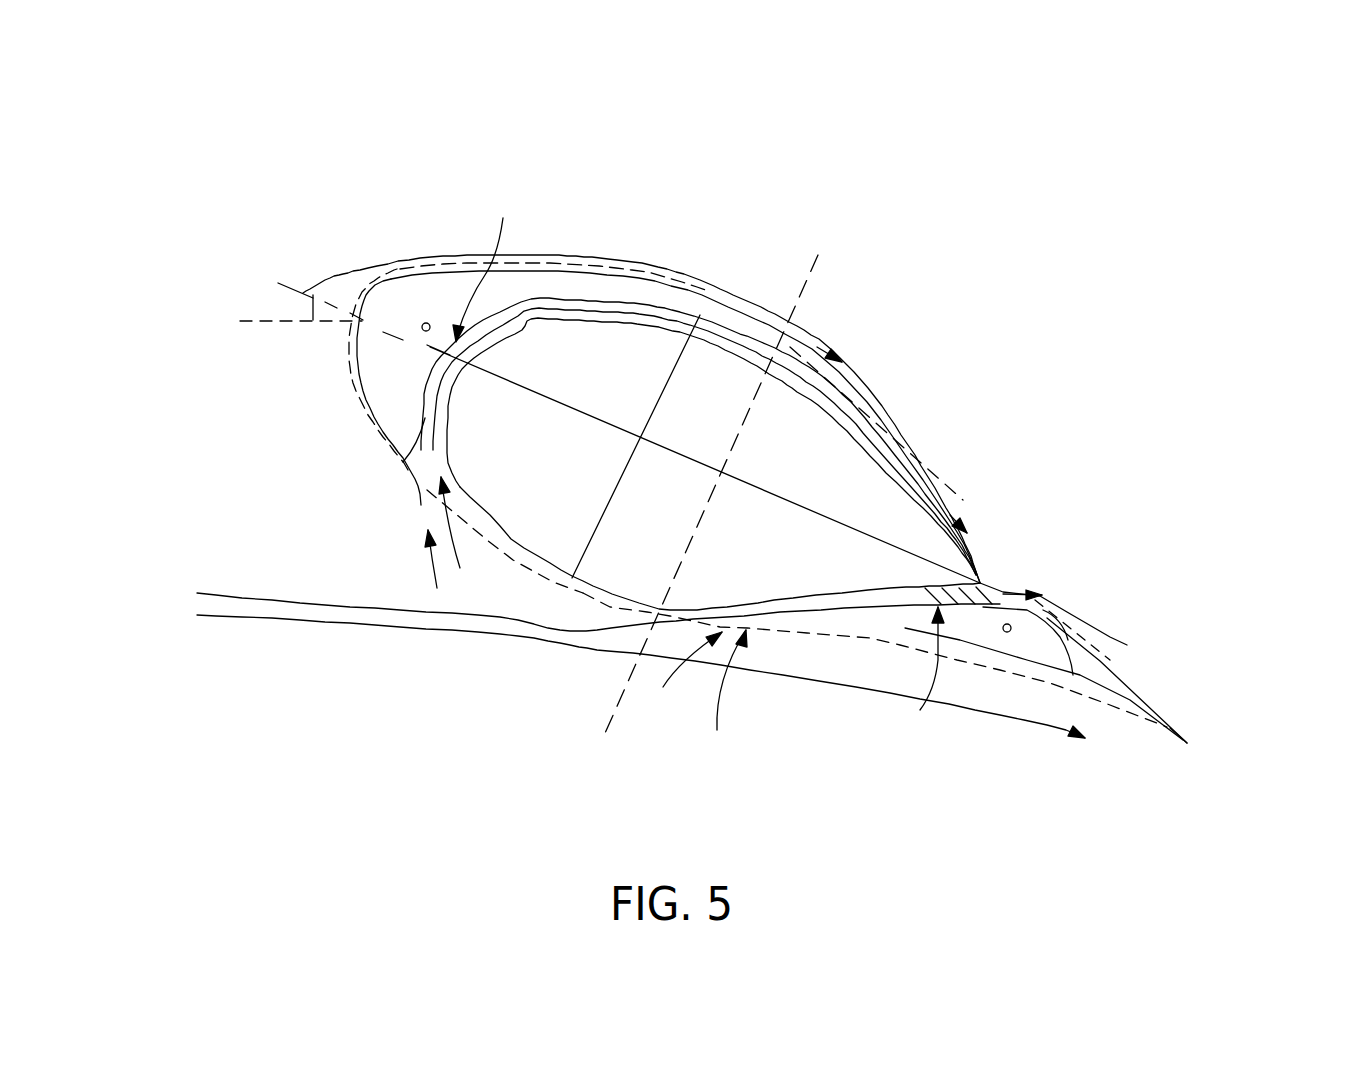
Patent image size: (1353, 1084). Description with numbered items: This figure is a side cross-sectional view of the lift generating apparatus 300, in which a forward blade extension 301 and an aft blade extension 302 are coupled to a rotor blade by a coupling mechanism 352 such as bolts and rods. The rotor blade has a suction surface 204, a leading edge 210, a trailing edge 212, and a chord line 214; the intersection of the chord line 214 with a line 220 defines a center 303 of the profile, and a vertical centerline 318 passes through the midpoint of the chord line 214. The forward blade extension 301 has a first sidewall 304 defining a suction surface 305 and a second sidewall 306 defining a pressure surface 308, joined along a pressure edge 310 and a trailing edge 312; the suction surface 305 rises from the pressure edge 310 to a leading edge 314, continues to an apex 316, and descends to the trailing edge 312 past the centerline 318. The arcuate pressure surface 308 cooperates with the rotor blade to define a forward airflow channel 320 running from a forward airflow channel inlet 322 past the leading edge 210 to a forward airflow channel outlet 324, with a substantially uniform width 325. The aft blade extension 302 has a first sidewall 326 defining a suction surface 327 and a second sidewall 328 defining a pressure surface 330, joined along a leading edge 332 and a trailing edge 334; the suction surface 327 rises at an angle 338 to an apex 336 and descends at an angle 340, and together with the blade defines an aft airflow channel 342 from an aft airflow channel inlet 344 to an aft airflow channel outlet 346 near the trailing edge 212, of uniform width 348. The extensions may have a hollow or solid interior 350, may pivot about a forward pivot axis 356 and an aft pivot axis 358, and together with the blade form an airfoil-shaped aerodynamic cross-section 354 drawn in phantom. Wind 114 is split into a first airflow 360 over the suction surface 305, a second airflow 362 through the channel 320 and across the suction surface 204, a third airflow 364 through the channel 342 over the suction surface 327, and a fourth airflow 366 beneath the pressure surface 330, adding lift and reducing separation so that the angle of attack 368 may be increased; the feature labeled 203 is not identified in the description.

The wind 114 is at (237, 432).
The inner cavity 203 is at (550, 568).
The suction surface 204 is at (678, 316).
The leading edge 210 is at (467, 367).
The trailing edge 212 is at (980, 583).
The chord line 214 is at (790, 497).
The line 220 is at (578, 567).
The lift generating apparatus 300 is at (1033, 198).
The forward blade extension 301 is at (385, 200).
The aft blade extension 302 is at (1230, 524).
The center 303 is at (641, 442).
The first sidewall 304 is at (585, 275).
The suction surface 305 is at (630, 284).
The second sidewall 306 is at (421, 450).
The pressure surface 308 is at (433, 450).
The pressure edge 310 is at (403, 460).
The trailing edge 312 is at (887, 420).
The leading edge 314 is at (372, 296).
The apex 316 is at (712, 312).
The vertical centerline 318 is at (600, 740).
The forward airflow channel 320 is at (427, 571).
The forward airflow channel inlet 322 is at (466, 537).
The forward airflow channel outlet 324 is at (878, 432).
The width 325 is at (760, 340).
The first sidewall 326 is at (1095, 660).
The suction surface 327 is at (1133, 690).
The second sidewall 328 is at (1092, 680).
The pressure surface 330 is at (1110, 695).
The leading edge 332 is at (803, 617).
The trailing edge 334 is at (1185, 735).
The apex 336 is at (1057, 612).
The angle 338 is at (983, 607).
The angle 340 is at (1073, 675).
The aft airflow channel 342 is at (680, 672).
The aft airflow channel inlet 344 is at (722, 696).
The aft airflow channel outlet 346 is at (1057, 570).
The width 348 is at (1000, 587).
The interior 350 is at (383, 372).
The coupling mechanism 352 is at (698, 462).
The aerodynamic cross-section 354 is at (963, 500).
The forward pivot axis 356 is at (429, 323).
The aft pivot axis 358 is at (1005, 634).
The first airflow 360 is at (313, 293).
The second airflow 362 is at (410, 460).
The third airflow 364 is at (576, 603).
The fourth airflow 366 is at (619, 669).
The angle of attack 368 is at (312, 320).